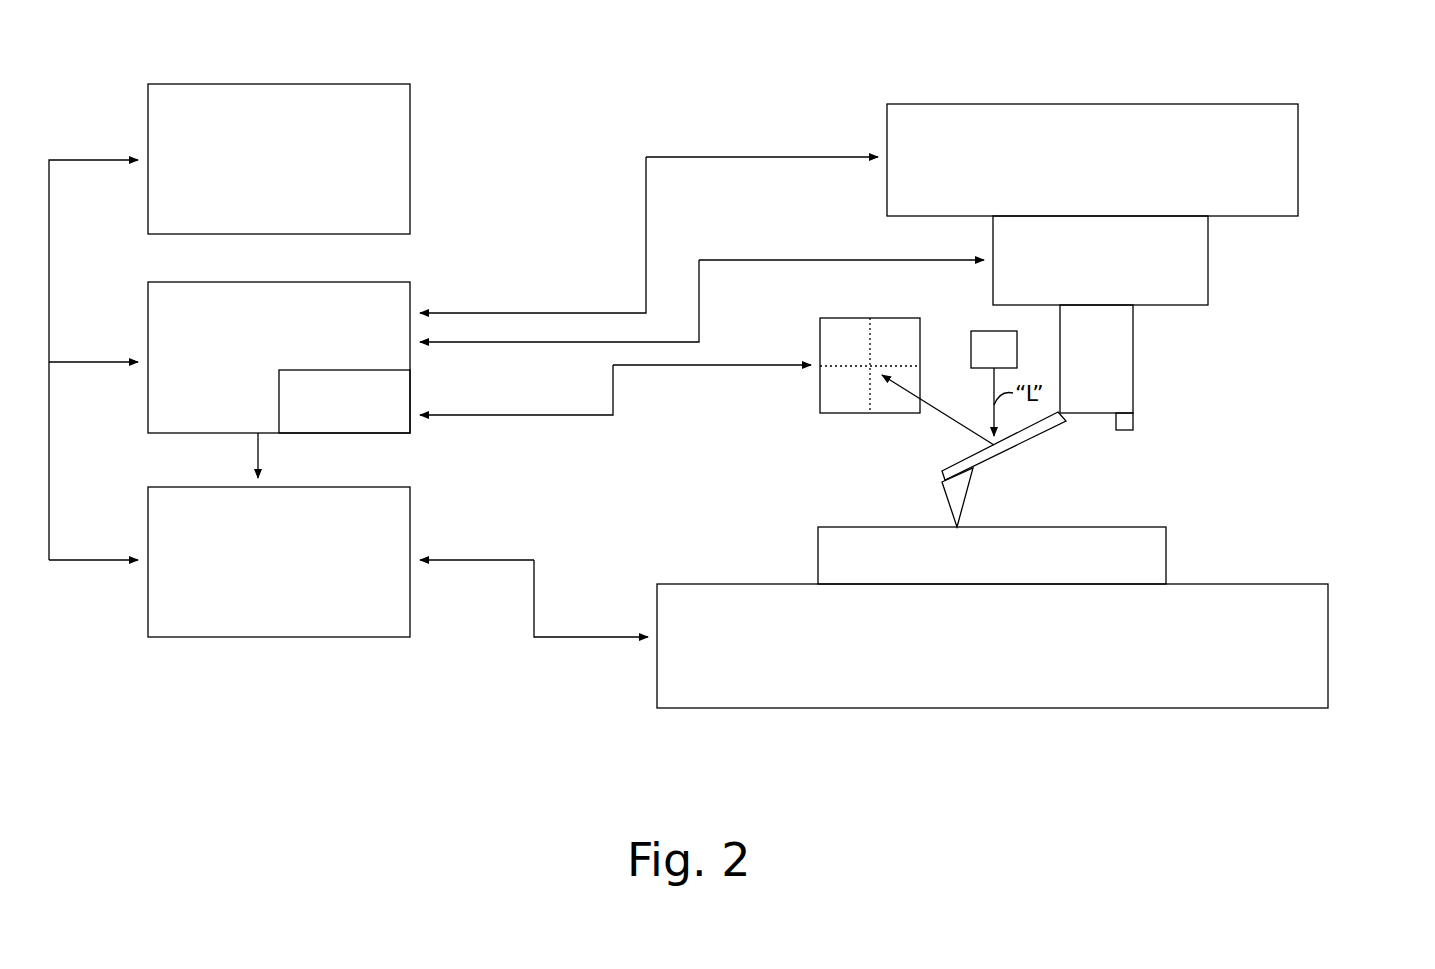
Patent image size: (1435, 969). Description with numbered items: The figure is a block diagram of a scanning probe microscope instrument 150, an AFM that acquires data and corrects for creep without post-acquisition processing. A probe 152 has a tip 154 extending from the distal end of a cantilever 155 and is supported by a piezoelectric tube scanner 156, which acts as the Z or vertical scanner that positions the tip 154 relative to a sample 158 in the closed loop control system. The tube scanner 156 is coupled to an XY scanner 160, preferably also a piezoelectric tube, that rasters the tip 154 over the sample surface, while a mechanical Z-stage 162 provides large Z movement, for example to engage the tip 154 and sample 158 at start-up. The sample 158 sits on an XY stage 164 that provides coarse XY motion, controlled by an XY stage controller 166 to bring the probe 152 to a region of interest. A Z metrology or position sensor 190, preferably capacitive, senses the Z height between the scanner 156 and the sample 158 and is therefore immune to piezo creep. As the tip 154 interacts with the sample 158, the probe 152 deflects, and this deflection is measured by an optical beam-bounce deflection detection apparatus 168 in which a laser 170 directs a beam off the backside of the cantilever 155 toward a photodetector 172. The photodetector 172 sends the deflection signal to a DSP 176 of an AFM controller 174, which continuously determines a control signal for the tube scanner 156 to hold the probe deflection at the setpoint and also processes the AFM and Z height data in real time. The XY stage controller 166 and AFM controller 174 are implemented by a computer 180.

The scanning probe microscope instrument 150 is at (1290, 60).
The probe 152 is at (1064, 449).
The tip 154 is at (943, 502).
The cantilever 155 is at (1012, 452).
The piezoelectric tube scanner 156 is at (1133, 355).
The sample 158 is at (1143, 527).
The XY scanner 160 is at (1208, 258).
The mechanical Z-stage 162 is at (1298, 150).
The XY stage 164 is at (1328, 644).
The XY stage controller 166 is at (365, 637).
The optical beam-bounce deflection detection apparatus 168 is at (928, 440).
The laser 170 is at (968, 350).
The photodetector 172 is at (818, 333).
The AFM controller 174 is at (390, 282).
The DSP 176 is at (388, 420).
The computer 180 is at (393, 84).
The Z metrology or position sensor 190 is at (1133, 422).